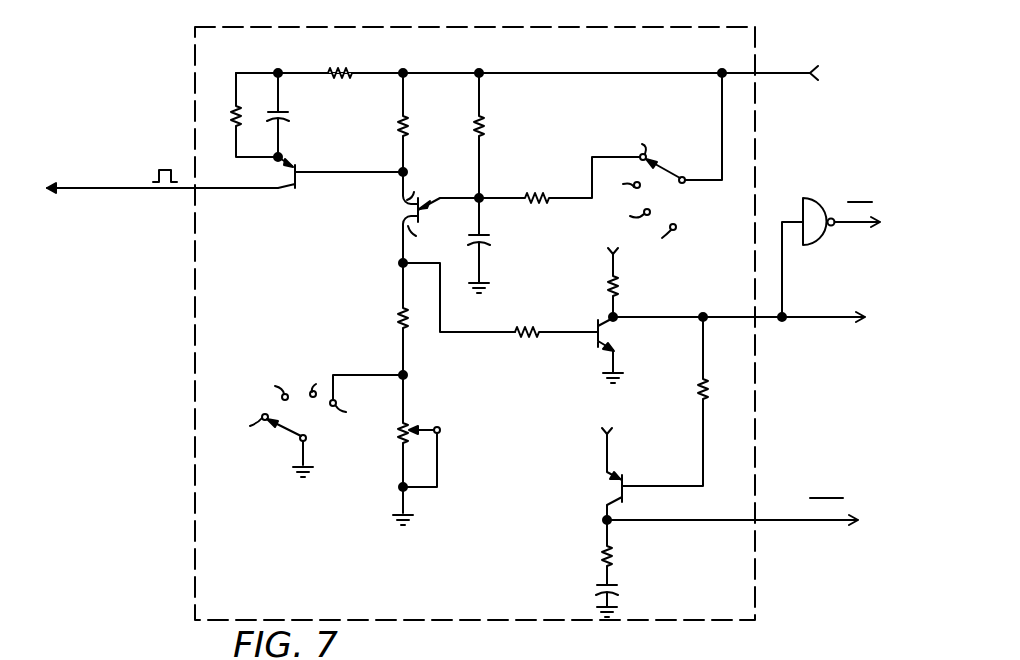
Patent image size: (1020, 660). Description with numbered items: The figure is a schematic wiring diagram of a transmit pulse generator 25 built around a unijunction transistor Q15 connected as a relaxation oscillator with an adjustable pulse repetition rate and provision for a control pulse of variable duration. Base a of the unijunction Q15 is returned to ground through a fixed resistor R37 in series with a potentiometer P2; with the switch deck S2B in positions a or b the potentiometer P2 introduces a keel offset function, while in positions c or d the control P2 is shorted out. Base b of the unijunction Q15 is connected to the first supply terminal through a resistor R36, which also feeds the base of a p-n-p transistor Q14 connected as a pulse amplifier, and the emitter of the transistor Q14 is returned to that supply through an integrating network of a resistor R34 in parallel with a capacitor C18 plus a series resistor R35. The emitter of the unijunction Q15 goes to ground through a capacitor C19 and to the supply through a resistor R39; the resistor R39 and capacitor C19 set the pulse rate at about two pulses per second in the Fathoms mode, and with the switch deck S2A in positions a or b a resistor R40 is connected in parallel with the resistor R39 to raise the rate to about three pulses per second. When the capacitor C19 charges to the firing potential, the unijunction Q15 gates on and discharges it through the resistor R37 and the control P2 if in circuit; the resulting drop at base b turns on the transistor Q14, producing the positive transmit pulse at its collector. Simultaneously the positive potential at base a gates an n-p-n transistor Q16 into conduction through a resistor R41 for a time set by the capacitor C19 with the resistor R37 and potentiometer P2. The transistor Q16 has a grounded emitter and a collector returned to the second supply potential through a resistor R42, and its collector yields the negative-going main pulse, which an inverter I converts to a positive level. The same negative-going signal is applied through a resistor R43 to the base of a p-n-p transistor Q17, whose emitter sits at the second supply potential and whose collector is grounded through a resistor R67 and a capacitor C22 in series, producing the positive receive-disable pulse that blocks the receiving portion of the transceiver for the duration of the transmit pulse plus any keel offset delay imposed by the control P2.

The transmit pulse generator 25 is at (416, 611).
The resistor R34 is at (239, 115).
The series resistor R35 is at (341, 63).
The resistor R36 is at (420, 122).
The fixed resistor R37 is at (385, 319).
The resistor R39 is at (496, 135).
The resistor R40 is at (559, 180).
The resistor R41 is at (555, 323).
The resistor R42 is at (630, 282).
The resistor R43 is at (683, 401).
The resistor R67 is at (587, 552).
The capacitor C18 is at (298, 115).
The capacitor C19 is at (499, 245).
The capacitor C22 is at (587, 601).
The p-n-p transistor Q14 is at (225, 175).
The unijunction transistor Q15 is at (425, 217).
The n-p-n transistor Q16 is at (623, 350).
The p-n-p transistor Q17 is at (599, 474).
The switch deck S2A is at (667, 161).
The switch deck S2B is at (321, 423).
The potentiometer P2 is at (416, 450).
The inverter I is at (821, 200).